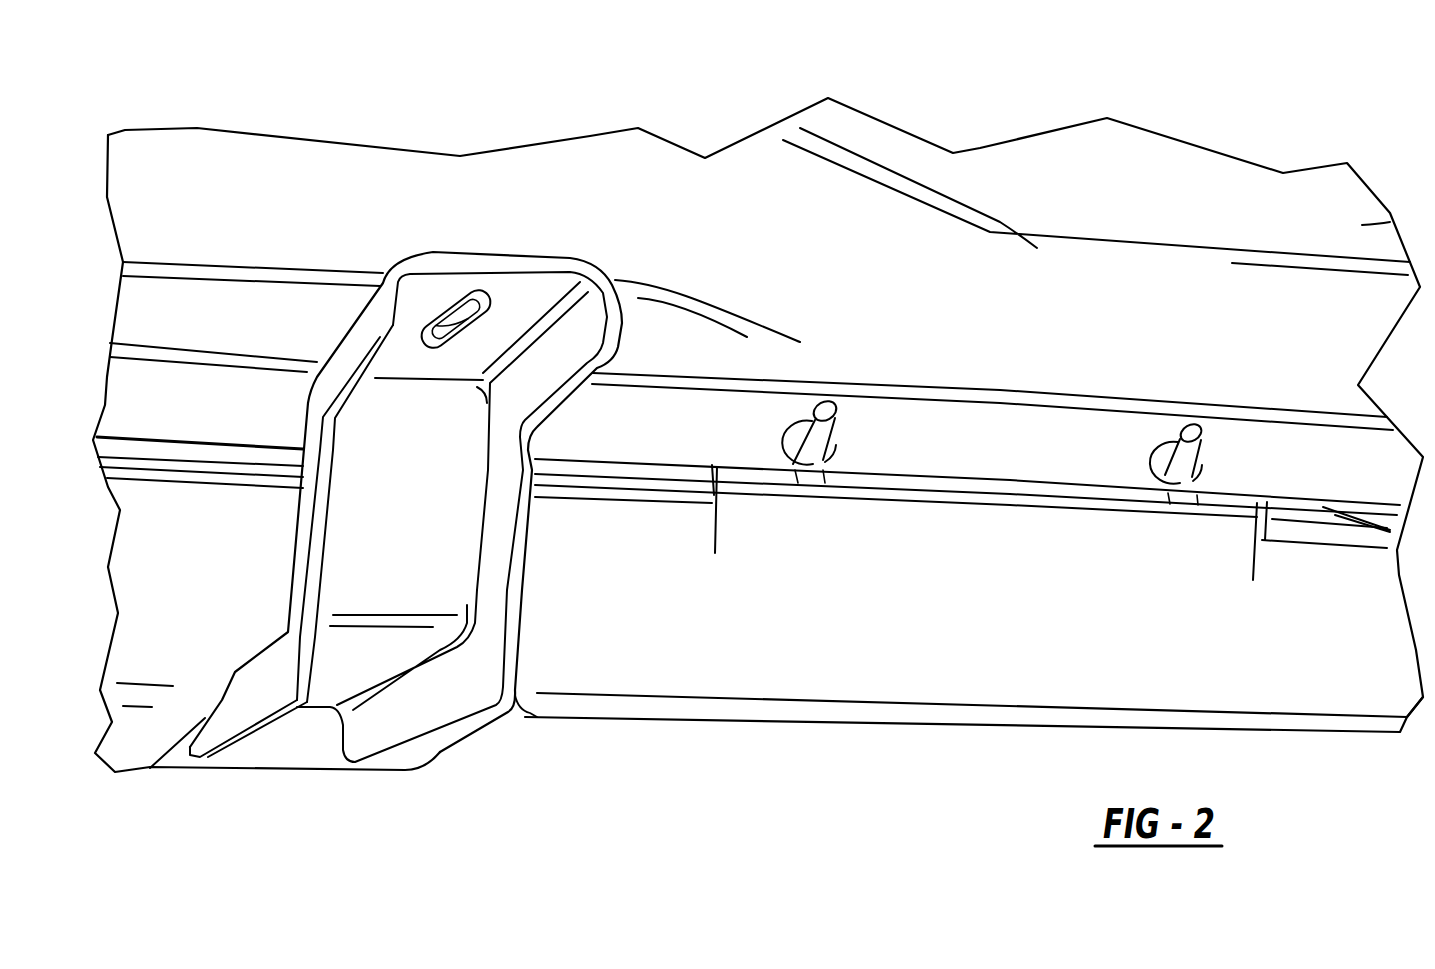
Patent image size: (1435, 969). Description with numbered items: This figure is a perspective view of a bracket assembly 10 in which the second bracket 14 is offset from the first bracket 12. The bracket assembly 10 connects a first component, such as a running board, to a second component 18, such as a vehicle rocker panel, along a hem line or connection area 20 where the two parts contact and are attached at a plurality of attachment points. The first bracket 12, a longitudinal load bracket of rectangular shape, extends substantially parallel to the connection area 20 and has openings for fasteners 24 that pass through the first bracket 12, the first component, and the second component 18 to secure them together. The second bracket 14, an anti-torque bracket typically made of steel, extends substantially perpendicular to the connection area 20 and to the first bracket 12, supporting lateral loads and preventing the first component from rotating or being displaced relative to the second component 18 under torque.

The bracket assembly 10 is at (253, 827).
The first bracket 12 is at (733, 473).
The second bracket 14 is at (523, 253).
The second component 18 is at (1392, 222).
The connection area 20 is at (1268, 502).
The fastener 24 is at (823, 405).